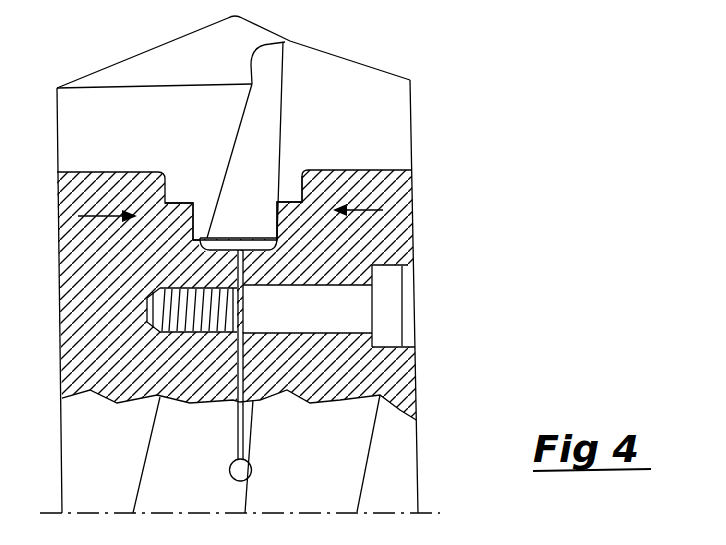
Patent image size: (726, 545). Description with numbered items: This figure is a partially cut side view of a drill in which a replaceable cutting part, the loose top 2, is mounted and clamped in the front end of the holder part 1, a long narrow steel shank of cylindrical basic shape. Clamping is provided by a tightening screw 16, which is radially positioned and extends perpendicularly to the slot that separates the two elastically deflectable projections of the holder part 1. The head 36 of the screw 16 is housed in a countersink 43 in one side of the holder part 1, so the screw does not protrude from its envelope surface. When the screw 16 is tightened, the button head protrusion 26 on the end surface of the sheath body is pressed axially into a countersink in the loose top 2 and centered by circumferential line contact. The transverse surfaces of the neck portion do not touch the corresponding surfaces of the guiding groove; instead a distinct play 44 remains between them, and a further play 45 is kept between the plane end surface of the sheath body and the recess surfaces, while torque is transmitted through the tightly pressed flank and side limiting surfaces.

The holder part 1 is at (424, 474).
The loose top 2 is at (425, 104).
The screw 16 is at (298, 395).
The button head protrusion 26 is at (243, 237).
The head 36 is at (395, 305).
The countersink 43 is at (372, 348).
The play 44 is at (287, 200).
The play 45 is at (198, 238).